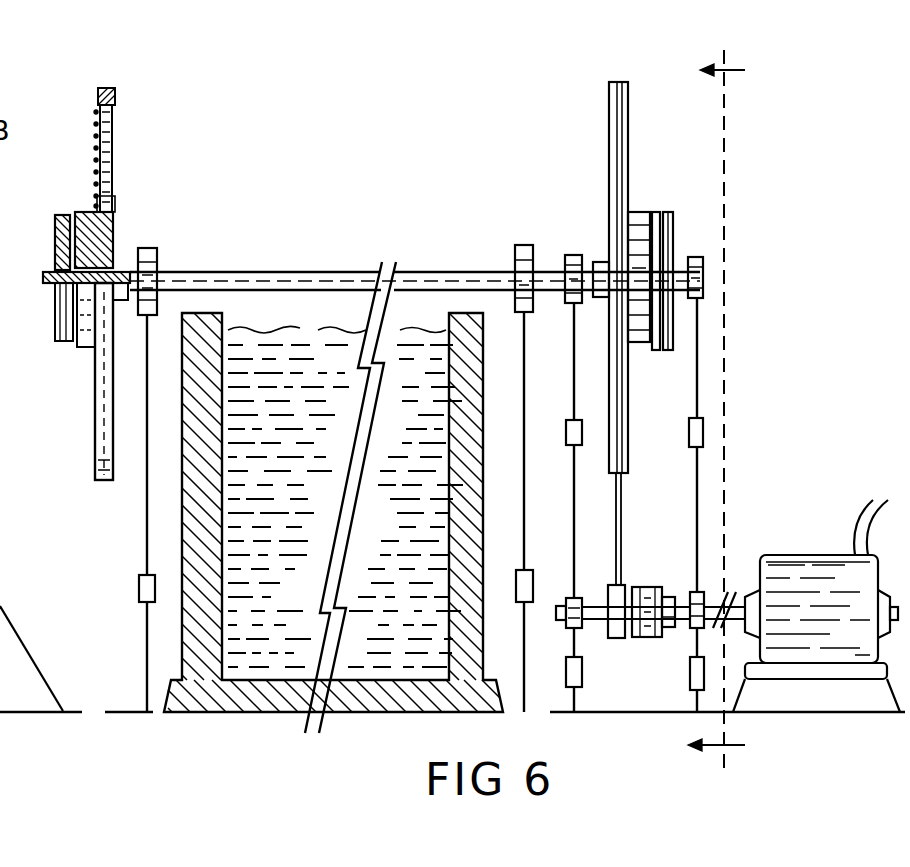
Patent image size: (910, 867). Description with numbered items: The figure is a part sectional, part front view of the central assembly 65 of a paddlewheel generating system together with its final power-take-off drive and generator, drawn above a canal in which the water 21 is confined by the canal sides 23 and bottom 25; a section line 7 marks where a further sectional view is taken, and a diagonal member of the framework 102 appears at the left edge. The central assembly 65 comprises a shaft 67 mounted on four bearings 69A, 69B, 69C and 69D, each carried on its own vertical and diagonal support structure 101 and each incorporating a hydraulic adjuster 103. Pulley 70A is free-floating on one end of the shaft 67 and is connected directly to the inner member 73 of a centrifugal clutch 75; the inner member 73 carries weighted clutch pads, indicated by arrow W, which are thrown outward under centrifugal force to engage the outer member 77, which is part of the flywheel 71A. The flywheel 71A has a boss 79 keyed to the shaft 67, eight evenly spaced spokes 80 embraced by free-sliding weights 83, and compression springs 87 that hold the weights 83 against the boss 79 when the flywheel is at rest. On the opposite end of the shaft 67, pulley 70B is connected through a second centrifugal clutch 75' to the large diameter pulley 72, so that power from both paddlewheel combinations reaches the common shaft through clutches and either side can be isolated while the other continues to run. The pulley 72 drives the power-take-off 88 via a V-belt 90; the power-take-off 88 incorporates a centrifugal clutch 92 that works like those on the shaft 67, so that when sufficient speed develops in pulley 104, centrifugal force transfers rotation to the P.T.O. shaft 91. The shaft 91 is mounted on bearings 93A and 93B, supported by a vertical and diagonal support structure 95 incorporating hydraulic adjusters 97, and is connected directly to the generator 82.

The section line 7- 7 is at (726, 410).
The water 21 is at (290, 571).
The canal sides 23 is at (222, 642).
The canal bottom 25 is at (295, 678).
The central assembly 65 is at (360, 150).
The central assembly shaft 67 is at (306, 272).
The bearing 69A is at (157, 255).
The bearing 69B is at (513, 245).
The bearing 69C is at (572, 256).
The bearing 69D is at (703, 265).
The pulley 70A is at (56, 240).
The pulley 70B is at (673, 235).
The flywheel 71A is at (114, 100).
The large diameter pulley 72 is at (609, 102).
The inner member 73 is at (50, 276).
The centrifugal clutch 75 is at (85, 381).
The centrifugal clutch 75' is at (652, 365).
The outer member 77 is at (88, 215).
The boss 79 is at (122, 232).
The spokes 80 is at (112, 122).
The generator 82 is at (816, 606).
The free-sliding weights 83 is at (113, 208).
The compression springs 87 is at (113, 140).
The power-take-off 88 is at (700, 585).
The V-belt 90 is at (646, 562).
The P.T.O. shaft 91 is at (686, 583).
The centrifugal clutch 92 is at (643, 637).
The bearing 93A is at (563, 622).
The bearing 93B is at (710, 600).
The support structure 95 is at (578, 632).
The hydraulic adjusters 97 is at (691, 682).
The support structures 101 is at (145, 508).
The frame leg 102 is at (31, 629).
The hydraulic adjuster 103 is at (138, 588).
The pulley 104 is at (654, 572).
The weighted clutch pads W is at (115, 248).